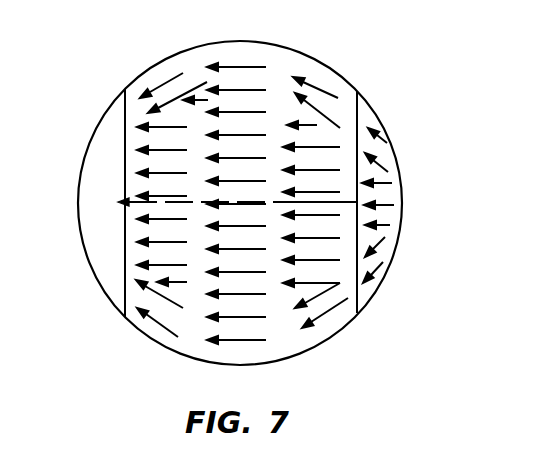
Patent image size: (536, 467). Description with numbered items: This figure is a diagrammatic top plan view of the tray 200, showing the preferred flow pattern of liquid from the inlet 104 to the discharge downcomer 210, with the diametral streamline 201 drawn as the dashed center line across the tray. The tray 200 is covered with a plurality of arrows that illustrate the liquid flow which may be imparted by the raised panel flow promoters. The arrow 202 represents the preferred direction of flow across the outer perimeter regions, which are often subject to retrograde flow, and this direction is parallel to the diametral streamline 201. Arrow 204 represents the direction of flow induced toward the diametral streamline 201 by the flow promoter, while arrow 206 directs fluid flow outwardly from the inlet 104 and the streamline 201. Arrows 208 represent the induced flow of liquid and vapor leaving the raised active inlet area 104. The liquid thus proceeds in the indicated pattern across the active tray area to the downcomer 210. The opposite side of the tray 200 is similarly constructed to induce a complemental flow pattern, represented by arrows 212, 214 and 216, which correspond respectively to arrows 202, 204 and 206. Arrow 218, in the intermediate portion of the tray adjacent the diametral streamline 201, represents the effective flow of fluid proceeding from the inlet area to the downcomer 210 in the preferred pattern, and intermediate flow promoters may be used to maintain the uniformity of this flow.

The tray 200 is at (293, 50).
The arrow 202 is at (237, 62).
The arrow 204 is at (157, 92).
The arrow 206 is at (328, 88).
The arrows 208 is at (373, 138).
The inlet 104 is at (398, 192).
The discharge downcomer 210 is at (85, 192).
The diametral streamline 201 is at (127, 204).
The arrow 218 is at (248, 202).
The arrow 214 is at (158, 324).
The arrow 216 is at (336, 308).
The arrow 212 is at (244, 340).